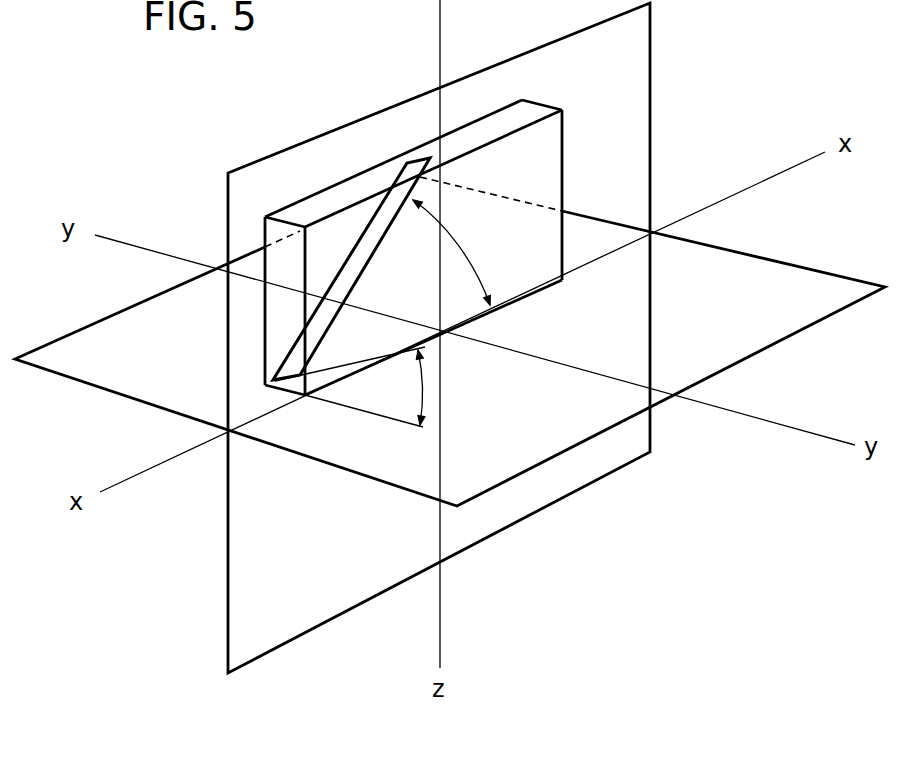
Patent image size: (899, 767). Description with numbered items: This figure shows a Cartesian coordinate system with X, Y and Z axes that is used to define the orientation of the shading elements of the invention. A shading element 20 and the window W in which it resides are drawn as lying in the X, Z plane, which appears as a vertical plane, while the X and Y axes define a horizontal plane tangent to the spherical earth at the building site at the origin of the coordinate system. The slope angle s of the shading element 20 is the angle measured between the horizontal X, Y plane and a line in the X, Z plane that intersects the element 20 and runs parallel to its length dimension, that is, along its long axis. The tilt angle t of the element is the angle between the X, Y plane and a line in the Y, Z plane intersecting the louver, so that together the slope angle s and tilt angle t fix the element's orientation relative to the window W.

The shading element 20 is at (376, 249).
The window W is at (318, 215).
The slope angle S is at (472, 262).
The tilt angle t is at (418, 388).